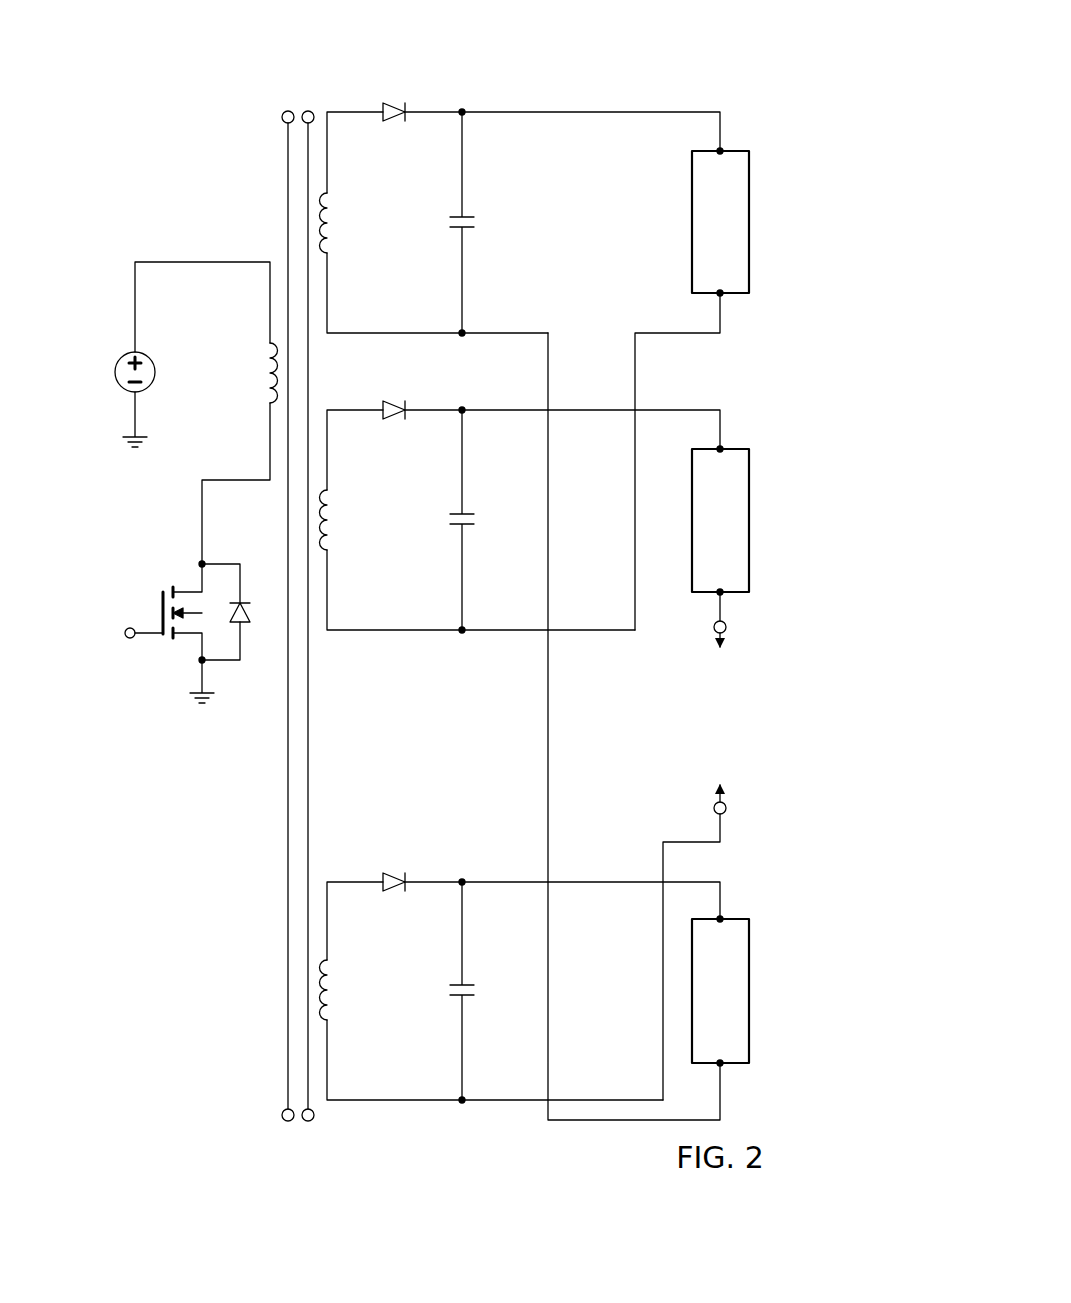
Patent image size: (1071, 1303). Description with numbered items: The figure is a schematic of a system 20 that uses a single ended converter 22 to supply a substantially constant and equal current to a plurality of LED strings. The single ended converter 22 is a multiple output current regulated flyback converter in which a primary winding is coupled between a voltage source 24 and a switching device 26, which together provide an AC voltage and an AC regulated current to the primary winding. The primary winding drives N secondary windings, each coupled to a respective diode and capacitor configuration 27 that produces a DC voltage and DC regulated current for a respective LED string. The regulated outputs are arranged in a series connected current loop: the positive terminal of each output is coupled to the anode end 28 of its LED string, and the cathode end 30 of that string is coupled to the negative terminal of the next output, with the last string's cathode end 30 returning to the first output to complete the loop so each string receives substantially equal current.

The system 20 is at (688, 68).
The single ended converter 22 is at (187, 193).
The voltage source 24 is at (95, 350).
The switching device 26 is at (152, 664).
The diode and capacitor configuration 27 is at (450, 211).
The anode end 28 is at (723, 147).
The cathode end 30 is at (723, 298).